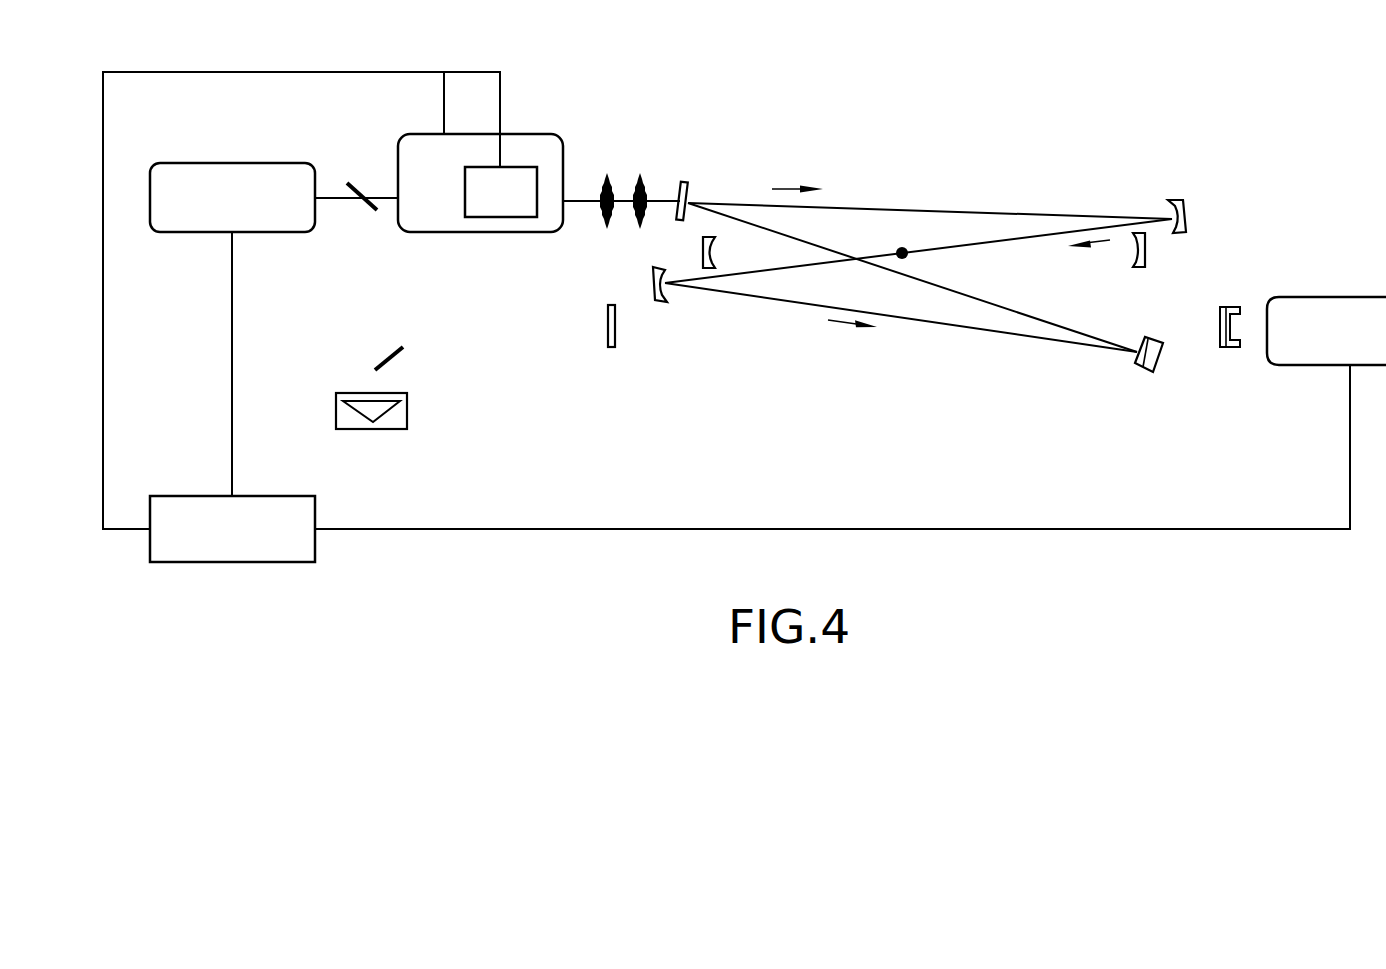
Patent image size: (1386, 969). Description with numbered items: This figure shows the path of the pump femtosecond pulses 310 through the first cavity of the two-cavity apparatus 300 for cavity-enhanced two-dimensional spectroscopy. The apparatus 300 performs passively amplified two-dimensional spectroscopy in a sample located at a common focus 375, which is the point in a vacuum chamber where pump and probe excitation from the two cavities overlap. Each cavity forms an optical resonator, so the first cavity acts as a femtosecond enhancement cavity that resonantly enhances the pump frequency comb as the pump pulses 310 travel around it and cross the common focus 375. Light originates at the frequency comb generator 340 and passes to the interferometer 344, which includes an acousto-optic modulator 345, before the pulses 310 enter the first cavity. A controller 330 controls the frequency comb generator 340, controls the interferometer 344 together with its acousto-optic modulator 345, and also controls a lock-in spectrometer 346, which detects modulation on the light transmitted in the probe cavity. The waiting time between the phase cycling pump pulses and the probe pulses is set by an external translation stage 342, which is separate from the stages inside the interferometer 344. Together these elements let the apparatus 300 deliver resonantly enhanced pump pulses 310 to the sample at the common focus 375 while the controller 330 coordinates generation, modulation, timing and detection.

The two-cavity apparatus 300 is at (315, 627).
The pump femtosecond pulses 310 is at (725, 292).
The controller 330 is at (254, 543).
The frequency comb generator 340 is at (254, 211).
The external translation stage 342 is at (373, 430).
The interferometer 344 is at (535, 135).
The AOM 345 is at (524, 206).
The lock-in spectrometer 346 is at (1371, 343).
The common focus 375 is at (903, 236).